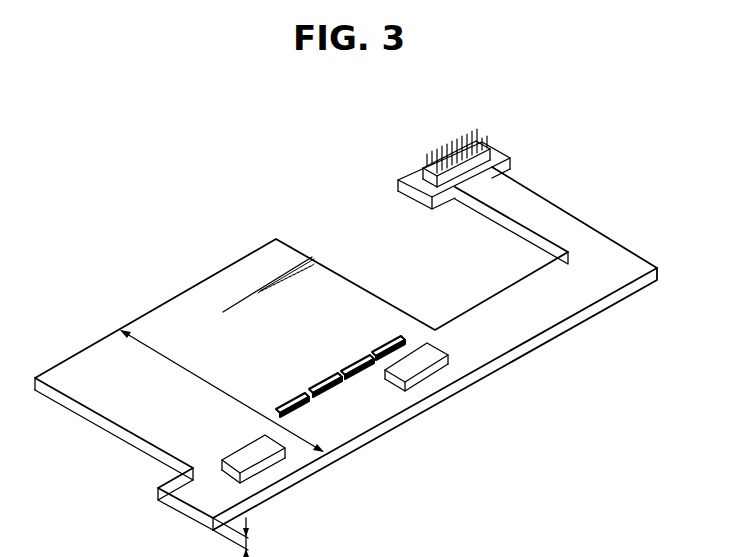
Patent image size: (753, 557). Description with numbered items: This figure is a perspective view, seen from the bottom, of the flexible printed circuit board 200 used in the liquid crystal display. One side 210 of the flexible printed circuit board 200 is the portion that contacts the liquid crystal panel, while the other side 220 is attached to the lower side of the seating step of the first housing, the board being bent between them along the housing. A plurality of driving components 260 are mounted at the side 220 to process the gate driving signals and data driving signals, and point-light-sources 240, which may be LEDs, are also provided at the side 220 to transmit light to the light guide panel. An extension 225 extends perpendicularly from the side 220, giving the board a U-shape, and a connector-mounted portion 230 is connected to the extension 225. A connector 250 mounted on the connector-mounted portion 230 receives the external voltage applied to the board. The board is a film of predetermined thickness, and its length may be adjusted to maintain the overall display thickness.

The flexible printed circuit board 200 is at (166, 287).
The side of the flexible printed circuit board 210 is at (143, 413).
The other side of the flexible printed circuit board 220 is at (333, 428).
The extension 225 is at (557, 215).
The connector-mounted portion 230 is at (498, 154).
The point-light-sources 240 is at (414, 363).
The connector 250 is at (448, 147).
The driving components 260 is at (332, 380).